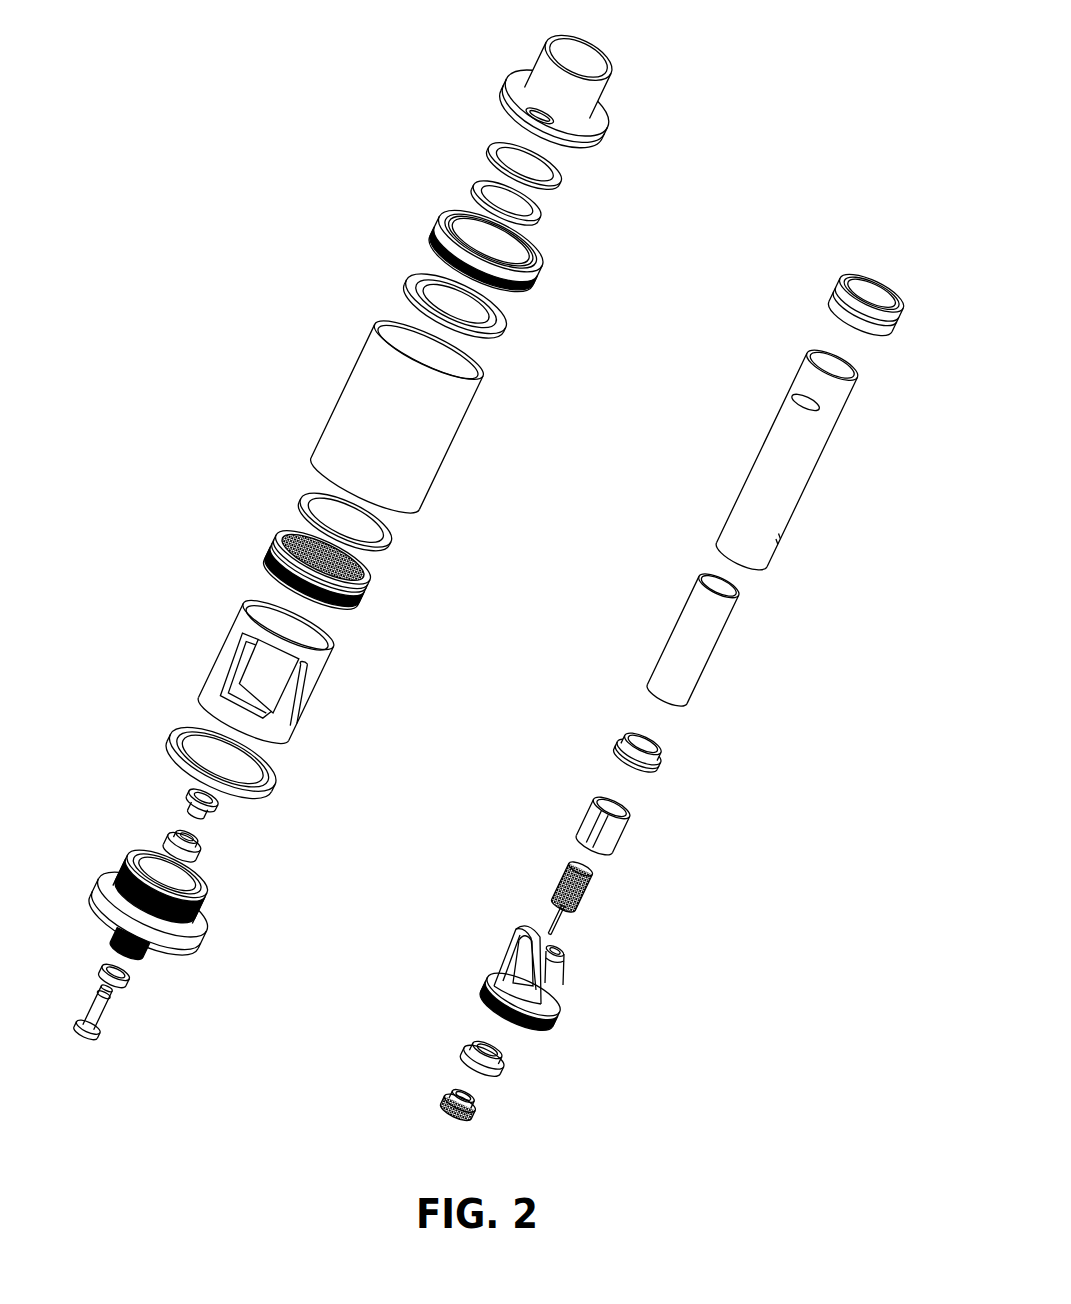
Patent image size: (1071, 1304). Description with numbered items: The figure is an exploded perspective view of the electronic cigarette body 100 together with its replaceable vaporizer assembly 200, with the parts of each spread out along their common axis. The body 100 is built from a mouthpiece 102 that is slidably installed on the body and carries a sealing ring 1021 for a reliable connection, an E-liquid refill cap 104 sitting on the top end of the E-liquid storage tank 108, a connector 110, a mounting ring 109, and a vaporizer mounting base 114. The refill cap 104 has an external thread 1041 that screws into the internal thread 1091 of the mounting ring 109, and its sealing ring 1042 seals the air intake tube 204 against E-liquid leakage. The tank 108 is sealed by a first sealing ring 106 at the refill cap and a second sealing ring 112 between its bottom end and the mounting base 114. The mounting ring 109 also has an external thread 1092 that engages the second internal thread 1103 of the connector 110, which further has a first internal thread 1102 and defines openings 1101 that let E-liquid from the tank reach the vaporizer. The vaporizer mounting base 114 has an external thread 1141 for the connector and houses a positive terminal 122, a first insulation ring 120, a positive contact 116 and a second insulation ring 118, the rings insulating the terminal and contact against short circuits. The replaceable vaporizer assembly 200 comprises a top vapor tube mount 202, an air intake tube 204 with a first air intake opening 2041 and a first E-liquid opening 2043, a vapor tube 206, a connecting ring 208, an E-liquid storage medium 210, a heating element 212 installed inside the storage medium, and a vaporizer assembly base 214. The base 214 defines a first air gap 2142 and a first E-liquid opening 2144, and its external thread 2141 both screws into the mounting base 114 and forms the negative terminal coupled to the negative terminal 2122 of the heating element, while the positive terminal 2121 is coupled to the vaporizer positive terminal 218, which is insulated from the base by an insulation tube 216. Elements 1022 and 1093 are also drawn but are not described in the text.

The electronic cigarette body 100 is at (117, 113).
The mouthpiece 102 is at (532, 90).
The air slot of mouthpiece 1022 is at (523, 108).
The sealing ring 1021 is at (492, 152).
The sealing ring 1042 is at (470, 194).
The E-liquid refill cap 104 is at (419, 243).
The external thread 1041 is at (433, 254).
The first sealing ring 106 is at (403, 285).
The E-liquid storage tank 108 is at (348, 383).
The sealing ring 1093 is at (298, 502).
The mounting ring 109 is at (268, 552).
The internal thread 1091 is at (316, 570).
The external thread 1092 is at (288, 540).
The connector 110 is at (262, 655).
The openings 1101 is at (265, 676).
The first internal thread 1102 is at (298, 693).
The second internal thread 1103 is at (255, 676).
The second sealing ring 112 is at (168, 745).
The positive contact 116 is at (187, 801).
The second insulation ring 118 is at (162, 838).
The vaporizer mounting base 114 is at (165, 902).
The external thread 1141 is at (118, 862).
The first insulation ring 120 is at (128, 980).
The positive terminal 122 is at (102, 1013).
The replaceable vaporizer assembly 200 is at (655, 235).
The top vapor tube mount 202 is at (837, 297).
The air intake tube 204 is at (776, 460).
The first air intake opening 2041 is at (806, 402).
The first E-liquid opening 2043 is at (778, 539).
The vapor tube 206 is at (680, 629).
The connecting ring 208 is at (617, 747).
The E-liquid storage medium 210 is at (580, 820).
The heating element 212 is at (520, 875).
The negative terminal 2122 is at (581, 869).
The positive terminal 2121 is at (556, 919).
The vaporizer assembly base 214 is at (535, 979).
The external thread 2141 is at (516, 1010).
The first air gap 2142 is at (517, 965).
The first E-liquid opening 2144 is at (555, 964).
The insulation tube 216 is at (463, 1057).
The vaporizer positive terminal 218 is at (450, 1103).